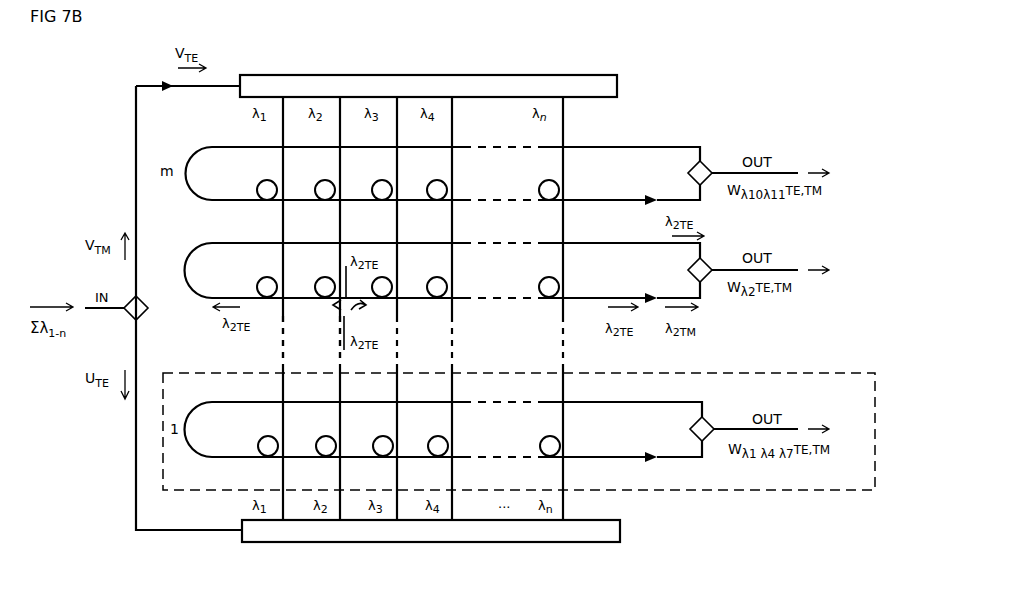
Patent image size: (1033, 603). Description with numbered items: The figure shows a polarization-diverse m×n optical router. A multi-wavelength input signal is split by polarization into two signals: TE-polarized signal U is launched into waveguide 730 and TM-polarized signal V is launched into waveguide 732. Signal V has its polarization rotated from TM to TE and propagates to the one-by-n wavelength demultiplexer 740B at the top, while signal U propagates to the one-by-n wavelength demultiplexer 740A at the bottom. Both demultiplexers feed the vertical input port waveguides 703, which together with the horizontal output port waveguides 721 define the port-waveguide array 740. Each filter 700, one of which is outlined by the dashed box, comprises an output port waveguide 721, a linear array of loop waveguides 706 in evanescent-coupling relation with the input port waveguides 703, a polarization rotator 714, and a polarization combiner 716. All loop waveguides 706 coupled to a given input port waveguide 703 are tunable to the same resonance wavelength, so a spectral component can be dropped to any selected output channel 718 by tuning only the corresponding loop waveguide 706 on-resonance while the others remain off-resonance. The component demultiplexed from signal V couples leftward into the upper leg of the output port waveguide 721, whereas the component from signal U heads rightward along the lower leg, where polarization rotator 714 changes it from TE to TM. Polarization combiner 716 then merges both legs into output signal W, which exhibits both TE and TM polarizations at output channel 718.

The waveguide 732 is at (136, 120).
The waveguide 730 is at (136, 478).
The port-waveguide array 740 is at (644, 122).
The 1×n wavelength demultiplexer 740B is at (428, 86).
The 1×n wavelength demultiplexer 740A is at (431, 531).
The output port waveguide 721 is at (185, 262).
The loop waveguide 706 is at (315, 278).
The input port waveguide 703 is at (340, 370).
The polarization rotator 714 is at (652, 295).
The polarization combiner 716 is at (707, 416).
The output channel 718 is at (780, 268).
The filter 700 is at (520, 445).